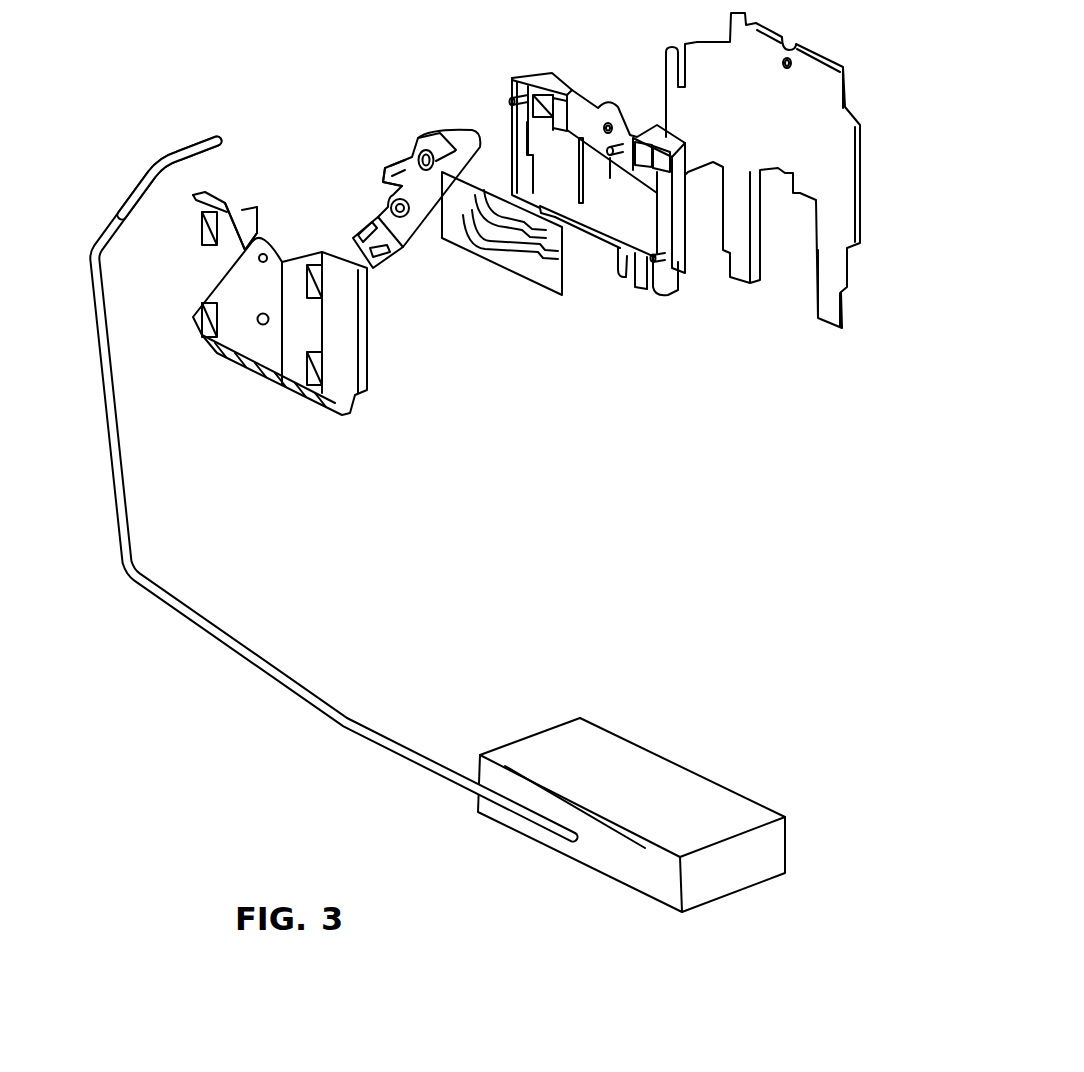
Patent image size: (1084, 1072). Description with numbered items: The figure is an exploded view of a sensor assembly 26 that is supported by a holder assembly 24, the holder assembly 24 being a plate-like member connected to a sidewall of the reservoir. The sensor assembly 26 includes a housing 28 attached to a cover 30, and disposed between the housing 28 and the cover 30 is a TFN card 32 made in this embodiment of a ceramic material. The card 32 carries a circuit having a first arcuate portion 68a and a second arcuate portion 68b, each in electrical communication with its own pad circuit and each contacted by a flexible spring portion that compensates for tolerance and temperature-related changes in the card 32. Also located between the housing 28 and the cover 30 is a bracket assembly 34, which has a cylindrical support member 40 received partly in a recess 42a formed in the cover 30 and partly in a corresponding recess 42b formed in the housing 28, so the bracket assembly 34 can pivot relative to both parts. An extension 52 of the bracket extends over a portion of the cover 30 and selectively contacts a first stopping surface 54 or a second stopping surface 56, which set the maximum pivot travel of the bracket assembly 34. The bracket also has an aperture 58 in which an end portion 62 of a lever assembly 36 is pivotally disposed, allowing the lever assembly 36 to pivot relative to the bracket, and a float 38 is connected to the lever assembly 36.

The holder assembly 24 is at (840, 62).
The sensor assembly 26 is at (666, 310).
The housing 28 is at (556, 77).
The cover 30 is at (352, 343).
The TFN card 32 is at (527, 270).
The bracket assembly 34 is at (390, 138).
The lever assembly 36 is at (267, 674).
The float 38 is at (695, 792).
The cylindrical support member 40 is at (397, 220).
The recess 42a is at (264, 252).
The recess 42b is at (608, 124).
The extension 52 is at (383, 172).
The first stopping surface 54 is at (238, 230).
The second stopping surface 56 is at (278, 262).
The aperture 58 is at (419, 146).
The end portion 62 is at (197, 143).
The first arcuate portion 68a is at (478, 232).
The second arcuate portion 68b is at (490, 203).